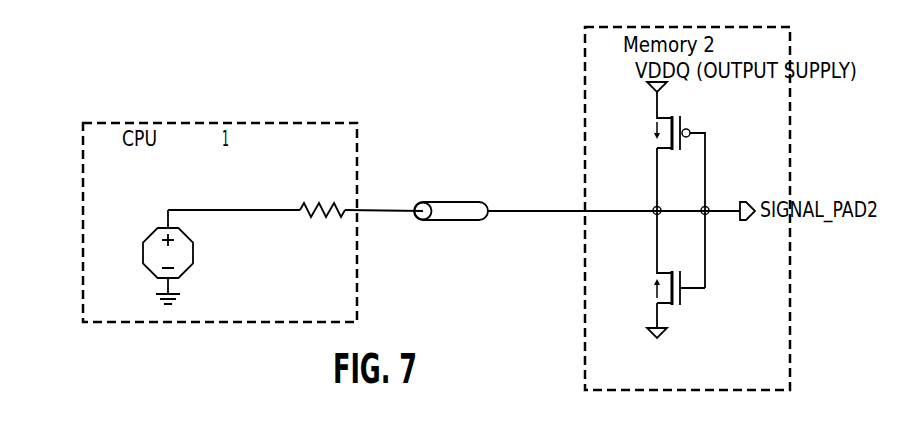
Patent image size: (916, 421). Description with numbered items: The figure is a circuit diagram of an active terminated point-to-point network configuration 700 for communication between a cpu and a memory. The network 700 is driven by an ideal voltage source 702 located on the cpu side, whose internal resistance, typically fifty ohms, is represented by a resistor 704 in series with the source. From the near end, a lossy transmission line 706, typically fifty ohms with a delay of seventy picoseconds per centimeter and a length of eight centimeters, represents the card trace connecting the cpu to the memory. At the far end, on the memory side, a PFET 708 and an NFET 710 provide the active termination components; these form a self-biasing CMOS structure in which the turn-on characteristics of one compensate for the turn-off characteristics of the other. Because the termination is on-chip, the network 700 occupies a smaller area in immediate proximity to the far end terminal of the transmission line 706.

The active terminated point-to-point network configuration 700 is at (440, 133).
The ideal voltage source E2 702 is at (143, 253).
The resistor R2 704 is at (318, 205).
The TX2 lossy transmission line 706 is at (453, 202).
The PFET P0 708 is at (682, 120).
The NFET N0 710 is at (682, 302).